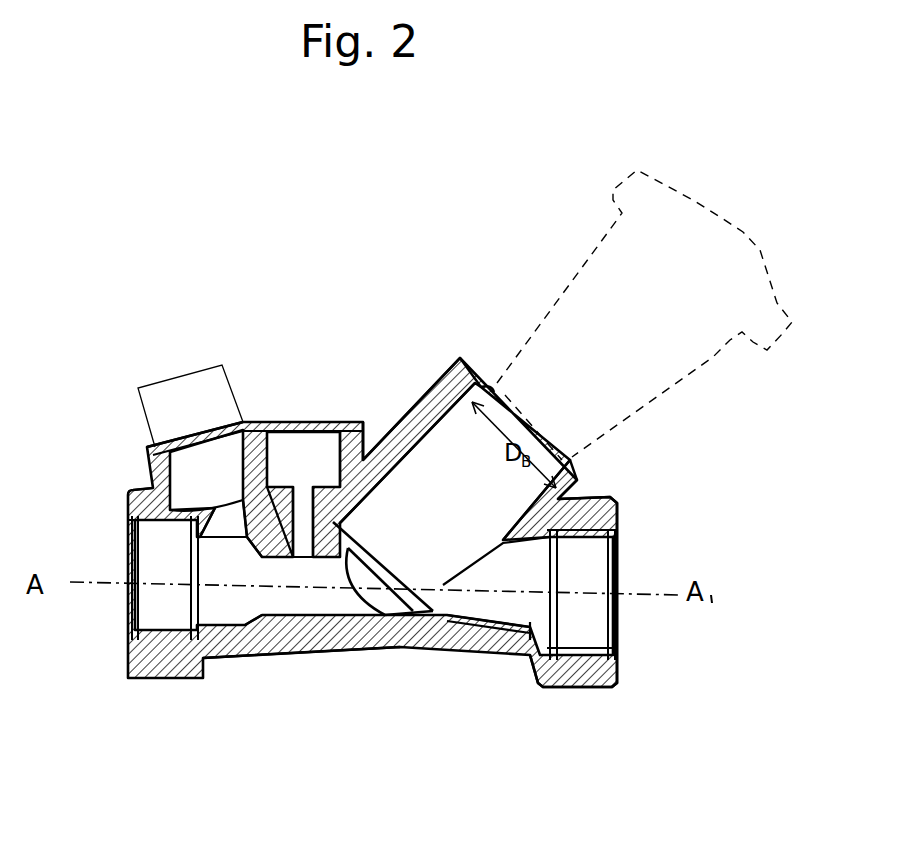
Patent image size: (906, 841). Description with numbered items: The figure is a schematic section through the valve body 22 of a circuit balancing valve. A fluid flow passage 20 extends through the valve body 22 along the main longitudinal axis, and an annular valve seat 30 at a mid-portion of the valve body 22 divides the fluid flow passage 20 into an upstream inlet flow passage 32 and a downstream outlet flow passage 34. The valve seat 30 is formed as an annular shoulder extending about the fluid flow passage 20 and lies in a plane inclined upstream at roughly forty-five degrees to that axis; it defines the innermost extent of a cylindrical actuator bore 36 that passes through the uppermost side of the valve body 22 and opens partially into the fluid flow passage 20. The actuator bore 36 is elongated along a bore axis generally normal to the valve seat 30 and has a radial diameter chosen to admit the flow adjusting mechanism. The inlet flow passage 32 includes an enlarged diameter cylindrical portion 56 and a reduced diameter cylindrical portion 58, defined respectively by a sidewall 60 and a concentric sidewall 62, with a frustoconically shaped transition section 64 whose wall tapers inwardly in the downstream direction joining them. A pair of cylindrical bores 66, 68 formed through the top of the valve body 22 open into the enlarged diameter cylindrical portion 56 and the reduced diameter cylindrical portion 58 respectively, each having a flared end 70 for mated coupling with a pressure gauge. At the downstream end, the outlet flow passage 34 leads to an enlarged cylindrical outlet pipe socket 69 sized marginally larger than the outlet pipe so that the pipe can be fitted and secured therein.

The fluid flow passage 20 is at (481, 653).
The valve body 22 is at (332, 640).
The valve seat 30 is at (425, 600).
The inlet flow passage 32 is at (233, 640).
The outlet flow passage 34 is at (531, 645).
The actuator bore 36 is at (524, 500).
The enlarged diameter cylindrical portion 56 is at (200, 540).
The reduced diameter cylindrical portion 58 is at (300, 640).
The sidewall 60 is at (180, 683).
The sidewall 62 is at (290, 640).
The frustoconically shaped transition section 64 is at (267, 640).
The cylindrical bore 66 is at (232, 500).
The cylindrical bore 68 is at (307, 487).
The outlet pipe socket 69 is at (593, 638).
The flared end 70 is at (190, 445).